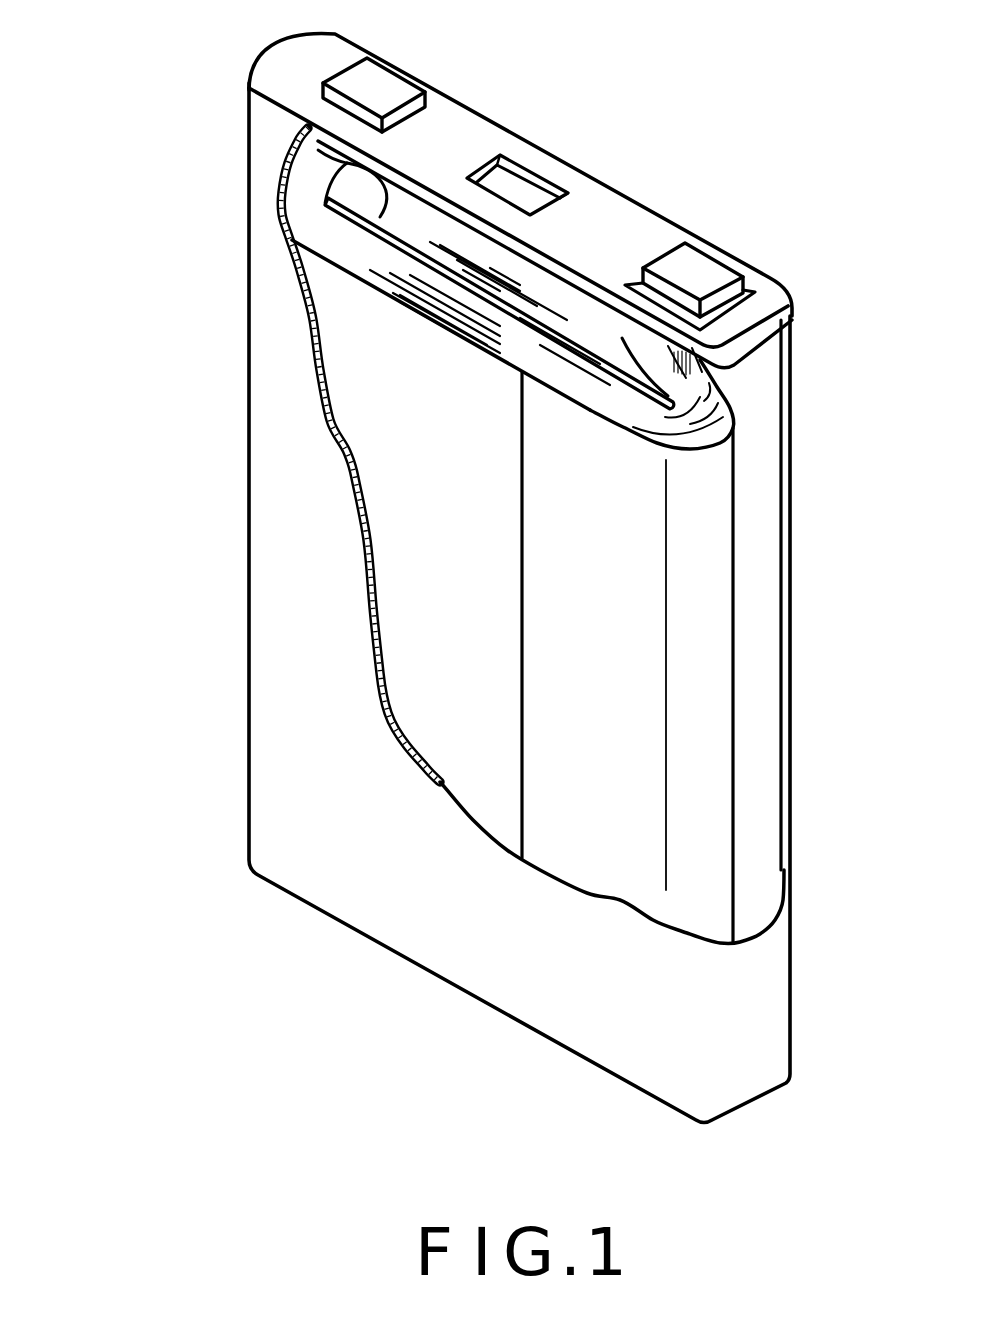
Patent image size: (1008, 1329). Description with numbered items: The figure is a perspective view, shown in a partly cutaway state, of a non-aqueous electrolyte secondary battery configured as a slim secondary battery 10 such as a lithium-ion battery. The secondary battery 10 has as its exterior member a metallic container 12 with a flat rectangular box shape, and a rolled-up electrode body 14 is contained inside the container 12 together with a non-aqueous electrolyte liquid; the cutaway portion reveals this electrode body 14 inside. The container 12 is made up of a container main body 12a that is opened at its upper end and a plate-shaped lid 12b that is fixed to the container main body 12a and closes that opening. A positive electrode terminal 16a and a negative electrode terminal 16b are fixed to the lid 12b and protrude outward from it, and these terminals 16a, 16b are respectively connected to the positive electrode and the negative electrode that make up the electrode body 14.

The secondary battery 10 is at (462, 561).
The container 12 is at (425, 577).
The container main body 12a is at (268, 428).
The lid 12b is at (614, 208).
The electrode body 14 is at (652, 694).
The positive electrode terminal 16a is at (427, 44).
The negative electrode terminal 16b is at (703, 272).